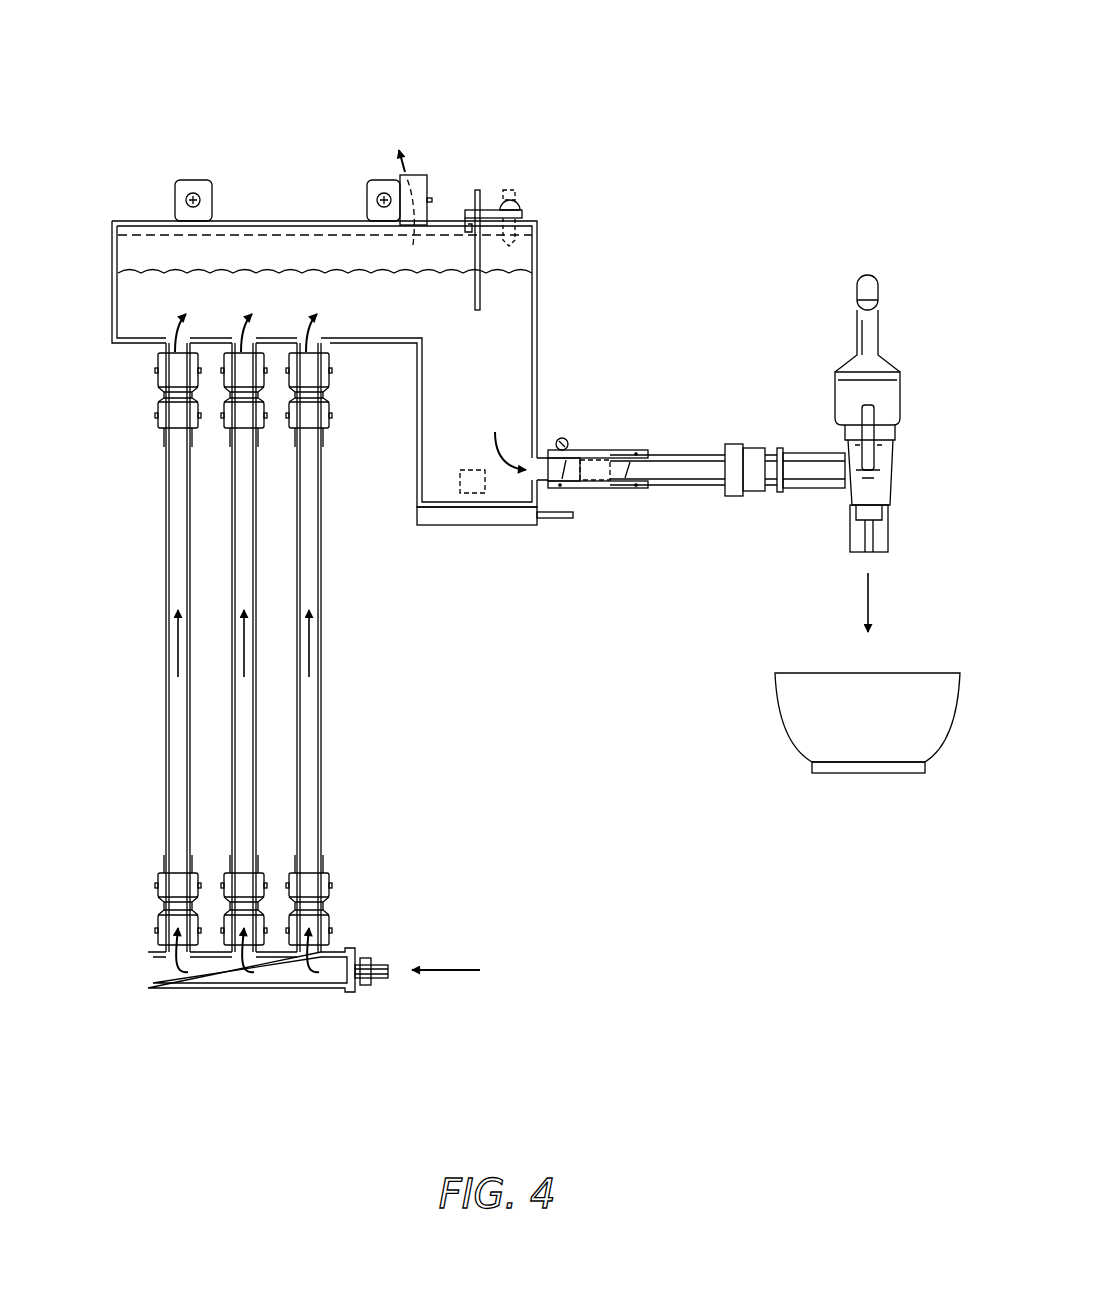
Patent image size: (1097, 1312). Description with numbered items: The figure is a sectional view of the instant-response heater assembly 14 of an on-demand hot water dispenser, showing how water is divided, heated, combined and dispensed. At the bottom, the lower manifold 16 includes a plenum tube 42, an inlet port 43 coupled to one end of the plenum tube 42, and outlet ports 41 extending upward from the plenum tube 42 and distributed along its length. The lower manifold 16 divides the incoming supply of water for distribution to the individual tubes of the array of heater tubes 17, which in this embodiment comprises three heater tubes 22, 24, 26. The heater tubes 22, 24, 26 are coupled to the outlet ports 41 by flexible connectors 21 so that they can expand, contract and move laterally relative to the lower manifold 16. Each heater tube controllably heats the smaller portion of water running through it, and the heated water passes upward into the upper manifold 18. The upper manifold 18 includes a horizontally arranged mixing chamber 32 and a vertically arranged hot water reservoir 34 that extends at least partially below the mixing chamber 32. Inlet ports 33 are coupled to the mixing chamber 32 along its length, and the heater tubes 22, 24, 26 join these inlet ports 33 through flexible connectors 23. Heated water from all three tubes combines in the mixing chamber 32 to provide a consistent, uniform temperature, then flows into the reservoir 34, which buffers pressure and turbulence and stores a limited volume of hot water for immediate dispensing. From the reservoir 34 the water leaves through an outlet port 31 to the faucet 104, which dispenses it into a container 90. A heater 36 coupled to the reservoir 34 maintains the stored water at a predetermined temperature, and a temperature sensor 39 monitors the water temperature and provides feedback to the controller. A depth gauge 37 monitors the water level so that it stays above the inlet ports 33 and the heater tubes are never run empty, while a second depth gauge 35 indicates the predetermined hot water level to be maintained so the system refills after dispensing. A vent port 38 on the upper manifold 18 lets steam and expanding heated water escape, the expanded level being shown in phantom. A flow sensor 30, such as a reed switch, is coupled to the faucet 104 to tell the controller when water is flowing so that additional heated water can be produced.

The instant-response heater assembly 14 is at (748, 113).
The lower manifold 16 is at (369, 915).
The array of heater tubes 17 is at (342, 717).
The upper manifold 18 is at (583, 226).
The flexible connectors 21 is at (130, 909).
The heater tube 22 is at (132, 643).
The flexible connectors 23 is at (129, 407).
The heater tube 24 is at (178, 643).
The heater tube 26 is at (354, 643).
The flow sensor 30 is at (603, 486).
The outlet port 31 is at (548, 441).
The mixing chamber 32 is at (107, 262).
The inlet ports 33 is at (130, 372).
The hot water reservoir 34 is at (512, 348).
The second depth gauge 35 is at (519, 186).
The heater 36 is at (536, 540).
The depth gauge 37 is at (492, 257).
The vent port 38 is at (441, 182).
The temperature sensor 39 is at (490, 498).
The outlet ports 41 is at (336, 882).
The plenum tube 42 is at (143, 975).
The inlet port 43 is at (380, 991).
The container 90 is at (766, 722).
The faucet 104 is at (833, 302).